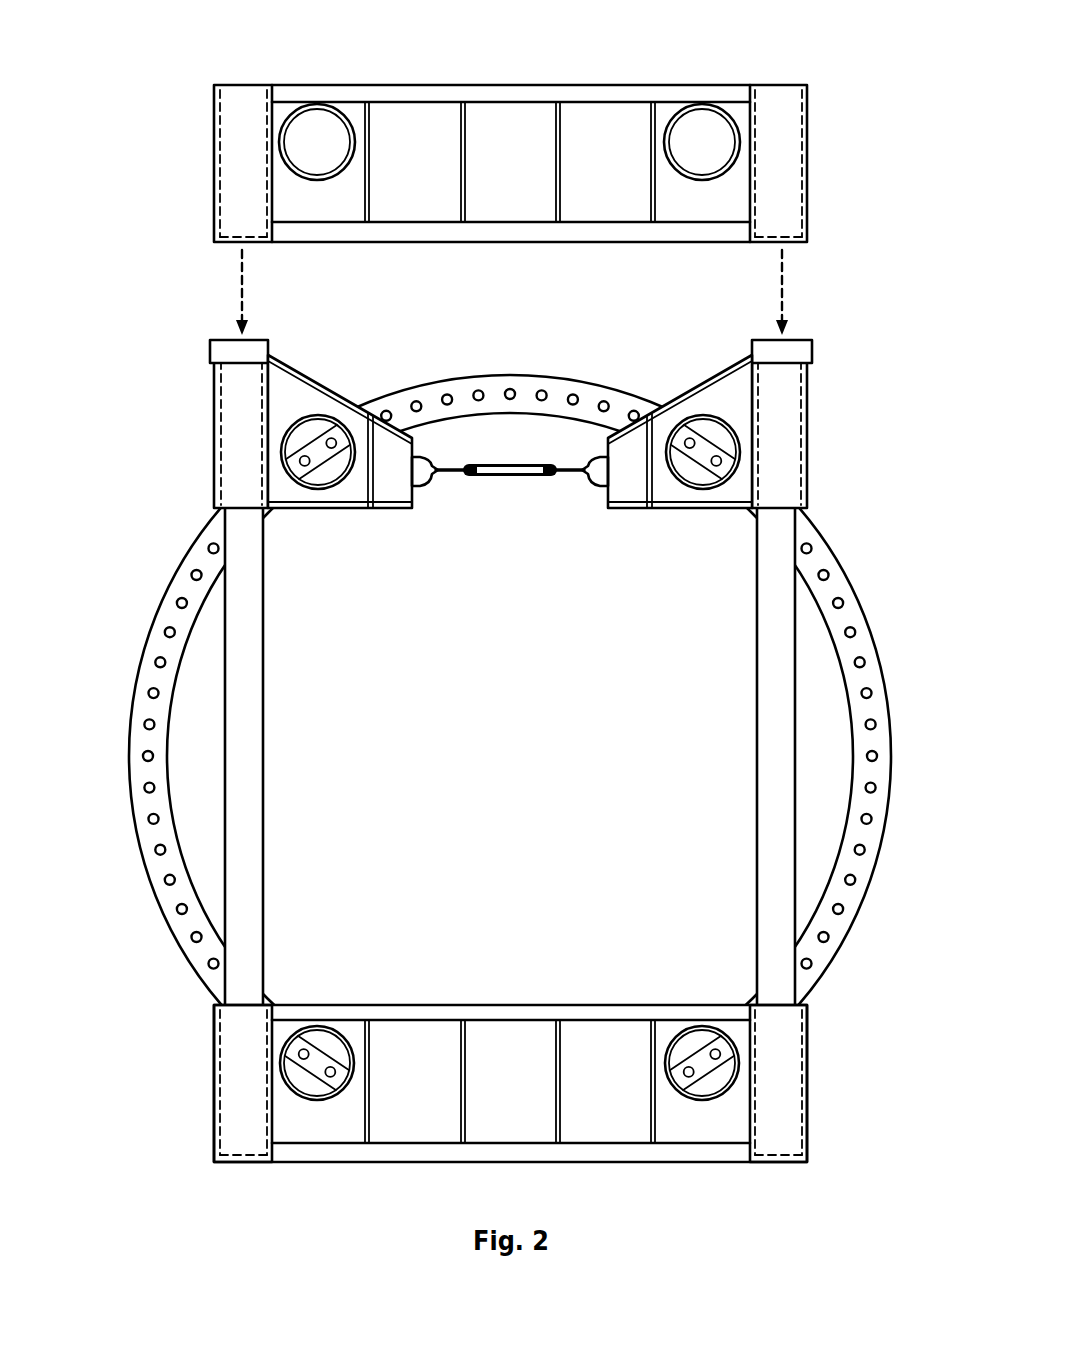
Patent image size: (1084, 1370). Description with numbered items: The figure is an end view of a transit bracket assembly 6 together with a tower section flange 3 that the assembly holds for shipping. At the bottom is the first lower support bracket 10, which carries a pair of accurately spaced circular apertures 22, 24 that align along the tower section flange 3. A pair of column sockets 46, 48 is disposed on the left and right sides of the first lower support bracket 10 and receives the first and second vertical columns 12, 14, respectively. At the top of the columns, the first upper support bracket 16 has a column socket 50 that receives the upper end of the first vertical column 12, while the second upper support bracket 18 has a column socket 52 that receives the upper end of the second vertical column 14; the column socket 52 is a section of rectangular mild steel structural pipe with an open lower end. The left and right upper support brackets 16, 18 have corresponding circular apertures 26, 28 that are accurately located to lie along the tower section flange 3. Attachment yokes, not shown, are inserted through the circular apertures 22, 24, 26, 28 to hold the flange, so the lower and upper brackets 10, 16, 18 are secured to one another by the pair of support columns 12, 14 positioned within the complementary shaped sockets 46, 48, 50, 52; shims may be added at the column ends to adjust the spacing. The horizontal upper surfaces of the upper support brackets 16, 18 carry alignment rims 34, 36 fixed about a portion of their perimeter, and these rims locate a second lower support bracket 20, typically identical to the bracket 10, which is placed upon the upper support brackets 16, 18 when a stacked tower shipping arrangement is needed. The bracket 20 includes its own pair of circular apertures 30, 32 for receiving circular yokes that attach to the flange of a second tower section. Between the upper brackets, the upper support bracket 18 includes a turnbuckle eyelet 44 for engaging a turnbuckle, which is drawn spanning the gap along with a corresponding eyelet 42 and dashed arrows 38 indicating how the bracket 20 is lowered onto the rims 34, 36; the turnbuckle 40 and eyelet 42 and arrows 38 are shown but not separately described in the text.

The bracket assembly 6 is at (84, 424).
The tower section flange 3 is at (878, 652).
The first lower support bracket 10 is at (513, 1081).
The first vertical column 12 is at (264, 770).
The second vertical column 14 is at (758, 770).
The first upper support bracket 16 is at (340, 415).
The second upper support bracket 18 is at (680, 412).
The second lower support bracket 20 is at (510, 168).
The circular aperture 22 is at (323, 1026).
The circular aperture 24 is at (696, 1026).
The circular aperture 26 is at (328, 418).
The circular aperture 28 is at (722, 360).
The circular aperture 30 is at (324, 104).
The circular aperture 32 is at (690, 103).
The alignment rim 34 is at (208, 344).
The alignment rim 36 is at (814, 345).
The insertion direction 38 is at (252, 283).
The turnbuckle 40 is at (496, 467).
The left lug 42 is at (428, 486).
The turnbuckle eyelet 44 is at (596, 486).
The column socket 46 is at (215, 1080).
The column socket 48 is at (806, 1064).
The column socket 50 is at (212, 456).
The column socket 52 is at (806, 437).